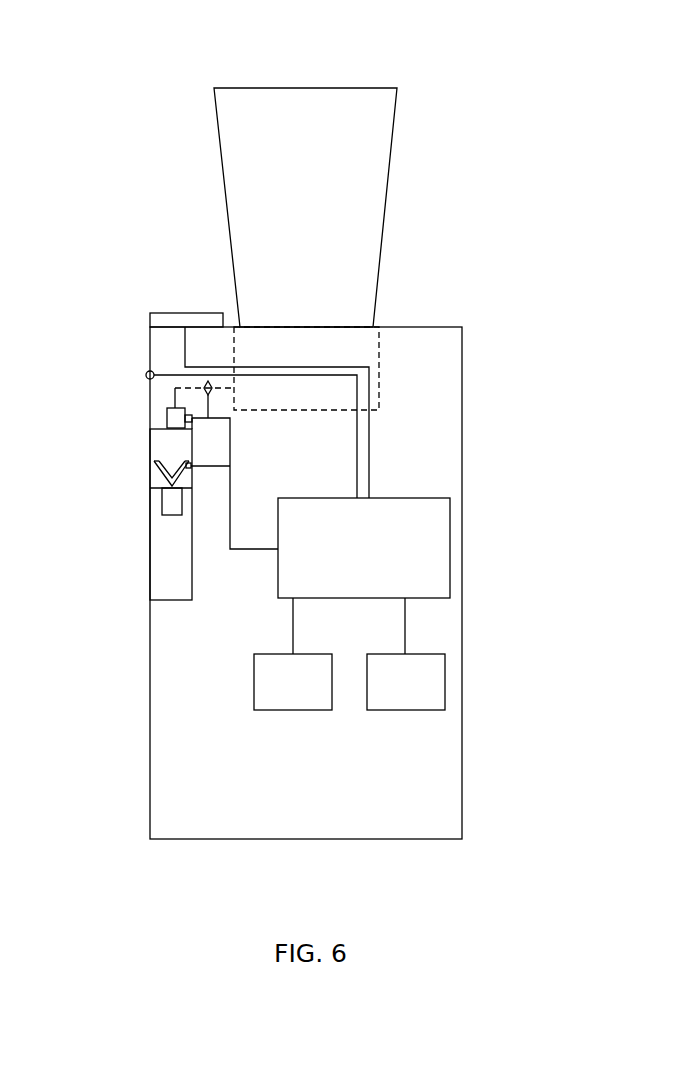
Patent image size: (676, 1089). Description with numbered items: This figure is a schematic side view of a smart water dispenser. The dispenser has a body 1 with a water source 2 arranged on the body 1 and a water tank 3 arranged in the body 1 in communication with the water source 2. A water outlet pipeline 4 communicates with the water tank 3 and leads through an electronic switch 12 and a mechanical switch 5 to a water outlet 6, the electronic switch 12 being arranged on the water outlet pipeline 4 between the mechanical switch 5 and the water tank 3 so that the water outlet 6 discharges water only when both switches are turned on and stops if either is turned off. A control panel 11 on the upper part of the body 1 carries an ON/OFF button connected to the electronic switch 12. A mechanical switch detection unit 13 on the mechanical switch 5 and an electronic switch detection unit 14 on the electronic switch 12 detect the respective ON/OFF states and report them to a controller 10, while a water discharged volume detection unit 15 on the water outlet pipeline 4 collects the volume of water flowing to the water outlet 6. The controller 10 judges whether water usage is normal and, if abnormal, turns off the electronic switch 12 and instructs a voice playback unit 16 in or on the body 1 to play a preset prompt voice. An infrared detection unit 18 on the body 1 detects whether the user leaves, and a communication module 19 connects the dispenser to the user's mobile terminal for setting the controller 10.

The body 1 is at (428, 355).
The water source 2 is at (333, 120).
The water tank 3 is at (342, 342).
The water outlet pipeline 4 is at (181, 388).
The mechanical switch 5 is at (172, 475).
The water outlet 6 is at (168, 505).
The controller 10 is at (428, 532).
The control panel 11 is at (203, 319).
The electronic switch 12 is at (177, 420).
The mechanical switch detection unit 13 is at (186, 465).
The electronic switch detection unit 14 is at (186, 417).
The water discharged volume detection unit 15 is at (206, 384).
The voice playback unit 16 is at (275, 685).
The infrared detection unit 18 is at (147, 372).
The communication module 19 is at (413, 678).